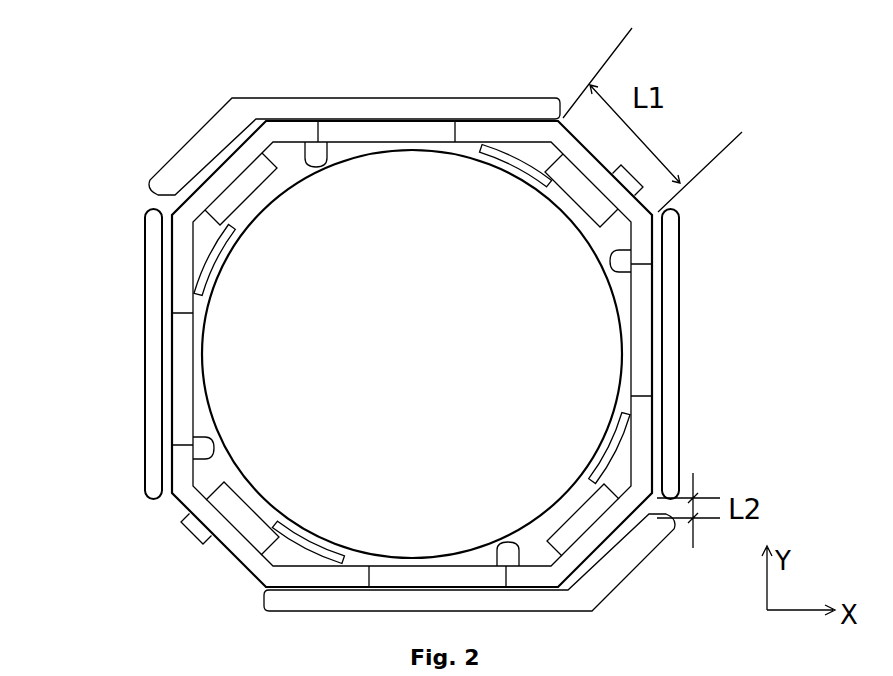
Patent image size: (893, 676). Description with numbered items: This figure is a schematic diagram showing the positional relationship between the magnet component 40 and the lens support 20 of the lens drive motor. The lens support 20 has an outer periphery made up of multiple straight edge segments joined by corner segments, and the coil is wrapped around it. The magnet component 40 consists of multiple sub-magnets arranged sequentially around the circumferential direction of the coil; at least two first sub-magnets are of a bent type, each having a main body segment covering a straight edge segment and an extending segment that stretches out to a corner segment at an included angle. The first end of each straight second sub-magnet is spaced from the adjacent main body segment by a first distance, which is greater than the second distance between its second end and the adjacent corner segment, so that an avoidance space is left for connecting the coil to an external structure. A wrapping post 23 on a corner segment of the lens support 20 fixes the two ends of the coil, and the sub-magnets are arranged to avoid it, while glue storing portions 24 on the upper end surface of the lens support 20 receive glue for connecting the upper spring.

The lens support 20 is at (615, 238).
The wrapping post 23 is at (668, 187).
The glue storing portion 24 is at (207, 440).
The magnet component 40 is at (673, 352).